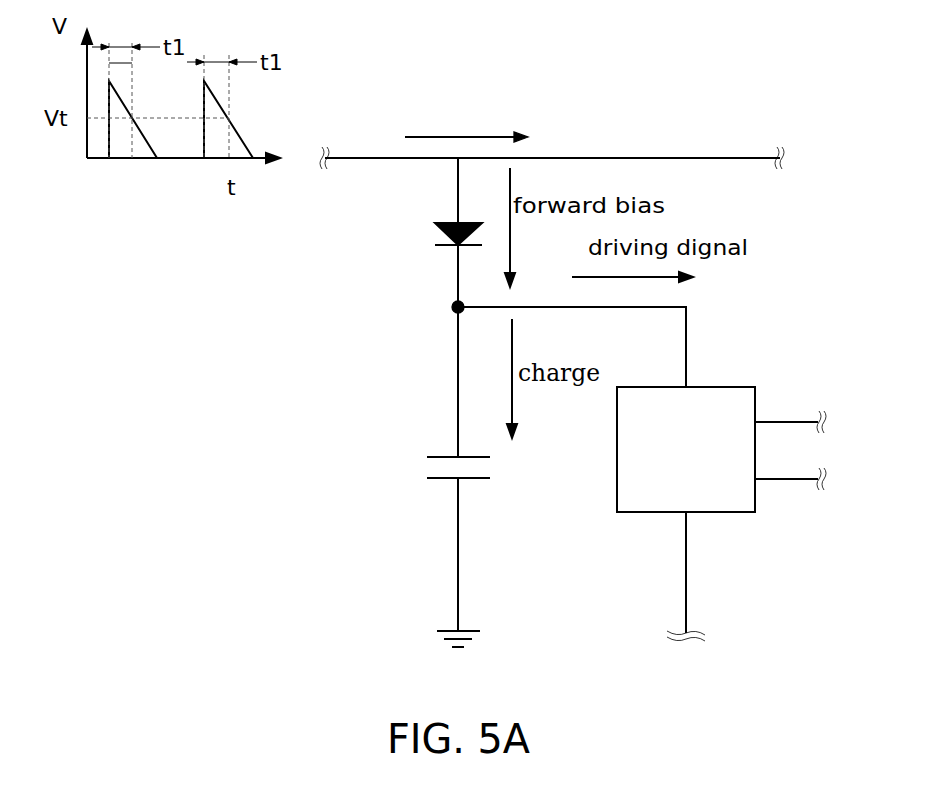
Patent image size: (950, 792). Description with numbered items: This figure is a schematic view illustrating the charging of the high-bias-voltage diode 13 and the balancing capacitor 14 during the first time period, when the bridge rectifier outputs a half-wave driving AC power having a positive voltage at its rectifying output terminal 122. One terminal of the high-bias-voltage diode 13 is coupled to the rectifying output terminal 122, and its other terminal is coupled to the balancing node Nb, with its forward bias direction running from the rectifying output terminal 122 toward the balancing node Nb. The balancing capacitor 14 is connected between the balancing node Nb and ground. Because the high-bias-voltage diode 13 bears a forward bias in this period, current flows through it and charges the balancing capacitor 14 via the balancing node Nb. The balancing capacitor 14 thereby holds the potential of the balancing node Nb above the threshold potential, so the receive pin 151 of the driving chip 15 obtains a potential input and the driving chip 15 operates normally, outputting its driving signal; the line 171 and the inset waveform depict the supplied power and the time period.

The bus line / signal line 171 is at (712, 158).
The rectifying output terminal 122 is at (365, 158).
The high-bias-voltage diode 13 is at (406, 272).
The balancing node Nb is at (456, 313).
The balancing capacitor 14 is at (400, 490).
The receive pin 151 is at (686, 347).
The driving chip 15 is at (617, 443).